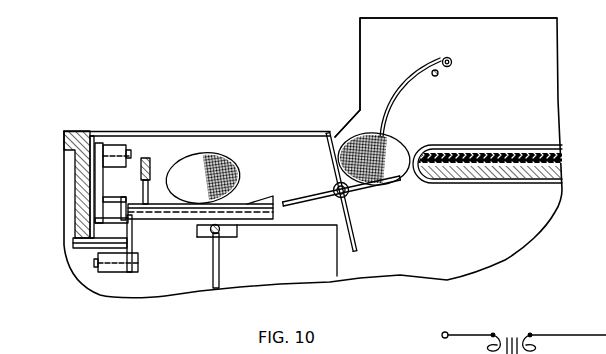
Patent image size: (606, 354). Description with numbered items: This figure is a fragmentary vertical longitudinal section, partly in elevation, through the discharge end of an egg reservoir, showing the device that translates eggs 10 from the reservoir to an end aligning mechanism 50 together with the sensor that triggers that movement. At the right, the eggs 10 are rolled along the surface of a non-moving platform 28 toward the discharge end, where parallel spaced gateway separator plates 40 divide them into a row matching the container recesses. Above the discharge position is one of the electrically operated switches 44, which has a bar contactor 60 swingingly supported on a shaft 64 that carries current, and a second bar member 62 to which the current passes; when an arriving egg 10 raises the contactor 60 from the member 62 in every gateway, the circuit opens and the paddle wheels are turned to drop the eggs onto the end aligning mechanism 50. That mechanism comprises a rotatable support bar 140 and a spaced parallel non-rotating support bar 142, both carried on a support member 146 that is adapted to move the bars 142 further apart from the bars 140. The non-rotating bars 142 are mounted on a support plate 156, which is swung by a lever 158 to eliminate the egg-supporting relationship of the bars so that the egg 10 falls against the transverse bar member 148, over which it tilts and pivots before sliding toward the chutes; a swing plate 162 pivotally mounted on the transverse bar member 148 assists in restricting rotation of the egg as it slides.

The egg 10 is at (223, 155).
The non-moving platform 28 is at (503, 145).
The gateway separator plate 40 is at (366, 72).
The electrically operated switch 44 is at (423, 57).
The end aligning mechanism 50 is at (247, 200).
The bar contactor 60 is at (396, 88).
The bar member 62 is at (436, 77).
The shaft 64 is at (453, 63).
The rotatable support bar 140 is at (187, 212).
The non-rotating support bar 142 is at (286, 195).
The support member 146 is at (66, 172).
The transverse bar member 148 is at (219, 231).
The support plate 156 is at (153, 183).
The lever 158 is at (139, 262).
The swing plate 162 is at (220, 262).